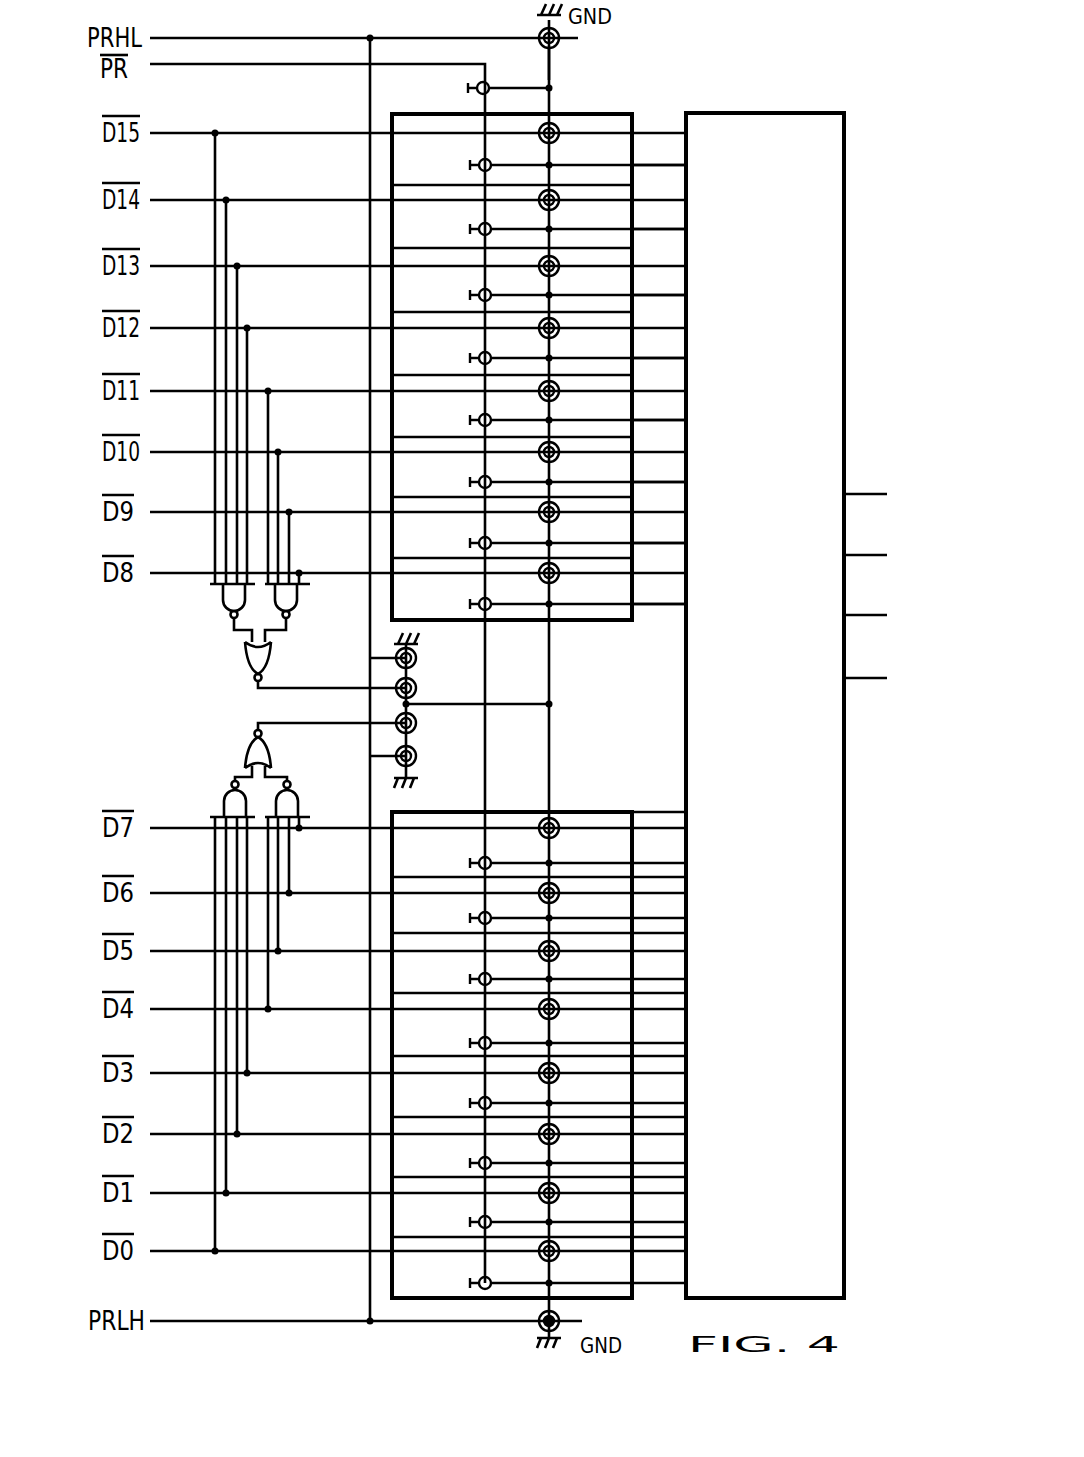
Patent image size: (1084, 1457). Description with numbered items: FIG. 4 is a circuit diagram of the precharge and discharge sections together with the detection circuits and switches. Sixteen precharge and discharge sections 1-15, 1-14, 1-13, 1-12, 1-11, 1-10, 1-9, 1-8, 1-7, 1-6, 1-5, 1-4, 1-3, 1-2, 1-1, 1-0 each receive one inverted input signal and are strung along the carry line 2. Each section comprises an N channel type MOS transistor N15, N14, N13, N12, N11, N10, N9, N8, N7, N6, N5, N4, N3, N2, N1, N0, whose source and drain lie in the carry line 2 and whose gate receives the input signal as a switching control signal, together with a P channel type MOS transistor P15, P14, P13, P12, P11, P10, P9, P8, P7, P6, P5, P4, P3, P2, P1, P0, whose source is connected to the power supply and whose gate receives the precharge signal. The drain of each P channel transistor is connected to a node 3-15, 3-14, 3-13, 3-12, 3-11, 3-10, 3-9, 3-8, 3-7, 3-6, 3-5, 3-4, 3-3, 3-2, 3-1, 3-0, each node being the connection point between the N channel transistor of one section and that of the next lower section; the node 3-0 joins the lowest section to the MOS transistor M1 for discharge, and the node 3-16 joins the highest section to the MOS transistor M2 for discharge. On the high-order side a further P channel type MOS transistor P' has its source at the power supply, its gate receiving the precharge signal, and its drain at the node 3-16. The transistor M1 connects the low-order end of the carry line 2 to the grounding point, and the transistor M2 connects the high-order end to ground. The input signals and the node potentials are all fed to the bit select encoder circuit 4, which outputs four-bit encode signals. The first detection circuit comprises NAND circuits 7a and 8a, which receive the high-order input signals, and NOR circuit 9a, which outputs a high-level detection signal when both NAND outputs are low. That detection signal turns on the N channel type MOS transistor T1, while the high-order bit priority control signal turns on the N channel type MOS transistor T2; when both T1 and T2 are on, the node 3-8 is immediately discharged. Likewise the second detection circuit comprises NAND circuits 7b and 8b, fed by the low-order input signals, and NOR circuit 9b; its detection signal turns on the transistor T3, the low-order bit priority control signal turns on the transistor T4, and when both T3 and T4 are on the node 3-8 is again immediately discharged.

The carry line 2 is at (580, 686).
The bit select encoder circuit 4 is at (804, 687).
The node 3-16 is at (554, 88).
The node 3-15 is at (588, 153).
The node 3-14 is at (588, 217).
The node 3-13 is at (588, 283).
The node 3-12 is at (588, 346).
The node 3-11 is at (588, 408).
The node 3-10 is at (588, 470).
The node 3-9 is at (588, 531).
The node 3-8 is at (588, 592).
The node 3-7 is at (588, 851).
The node 3-6 is at (588, 906).
The node 3-5 is at (588, 967).
The node 3-4 is at (588, 1031).
The node 3-3 is at (588, 1091).
The node 3-2 is at (588, 1151).
The node 3-1 is at (588, 1210).
The node 3-0 is at (588, 1271).
The precharge and discharge section 1-15 is at (659, 180).
The precharge and discharge section 1-14 is at (659, 244).
The precharge and discharge section 1-13 is at (659, 310).
The precharge and discharge section 1-12 is at (659, 373).
The precharge and discharge section 1-11 is at (659, 435).
The precharge and discharge section 1-10 is at (659, 497).
The precharge and discharge section 1-9 is at (659, 558).
The precharge and discharge section 1-8 is at (659, 624).
The precharge and discharge section 1-7 is at (659, 812).
The precharge and discharge section 1-6 is at (659, 877).
The precharge and discharge section 1-5 is at (659, 933).
The precharge and discharge section 1-4 is at (659, 993).
The precharge and discharge section 1-3 is at (659, 1056).
The precharge and discharge section 1-2 is at (659, 1117).
The precharge and discharge section 1-1 is at (659, 1177).
The precharge and discharge section 1-0 is at (659, 1237).
The N channel type MOS transistor N15 is at (528, 142).
The N channel type MOS transistor N14 is at (528, 209).
The N channel type MOS transistor N13 is at (528, 275).
The N channel type MOS transistor N12 is at (528, 337).
The N channel type MOS transistor N11 is at (528, 400).
The N channel type MOS transistor N10 is at (528, 461).
The N channel type MOS transistor N9 is at (528, 521).
The N channel type MOS transistor N8 is at (528, 582).
The N channel type MOS transistor N7 is at (528, 837).
The N channel type MOS transistor N6 is at (528, 902).
The N channel type MOS transistor N5 is at (528, 960).
The N channel type MOS transistor N4 is at (528, 1018).
The N channel type MOS transistor N3 is at (528, 1082).
The N channel type MOS transistor N2 is at (528, 1143).
The N channel type MOS transistor N1 is at (528, 1202).
The N channel type MOS transistor N0 is at (528, 1260).
The P channel type MOS transistor P15 is at (442, 159).
The P channel type MOS transistor P14 is at (442, 223).
The P channel type MOS transistor P13 is at (442, 289).
The P channel type MOS transistor P12 is at (442, 352).
The P channel type MOS transistor P11 is at (442, 414).
The P channel type MOS transistor P10 is at (442, 476).
The P channel type MOS transistor P9 is at (442, 537).
The P channel type MOS transistor P8 is at (442, 598).
The P channel type MOS transistor P7 is at (442, 857).
The P channel type MOS transistor P6 is at (442, 912).
The P channel type MOS transistor P5 is at (442, 973).
The P channel type MOS transistor P4 is at (442, 1037).
The P channel type MOS transistor P3 is at (442, 1097).
The P channel type MOS transistor P2 is at (442, 1157).
The P channel type MOS transistor P1 is at (442, 1216).
The P channel type MOS transistor P0 is at (442, 1277).
The P channel type MOS transistor P' is at (466, 75).
The MOS transistor for discharge M1 is at (529, 1334).
The MOS transistor for discharge M2 is at (523, 29).
The N channel type MOS transistor T1 is at (431, 688).
The N channel type MOS transistor T2 is at (431, 658).
The N channel type MOS transistor T3 is at (431, 723).
The N channel type MOS transistor T4 is at (431, 756).
The NAND circuit 7a is at (222, 606).
The NAND circuit 8a is at (298, 606).
The NOR circuit 9a is at (270, 656).
The NAND circuit 7b is at (299, 800).
The NAND circuit 8b is at (223, 800).
The NOR circuit 9b is at (270, 750).